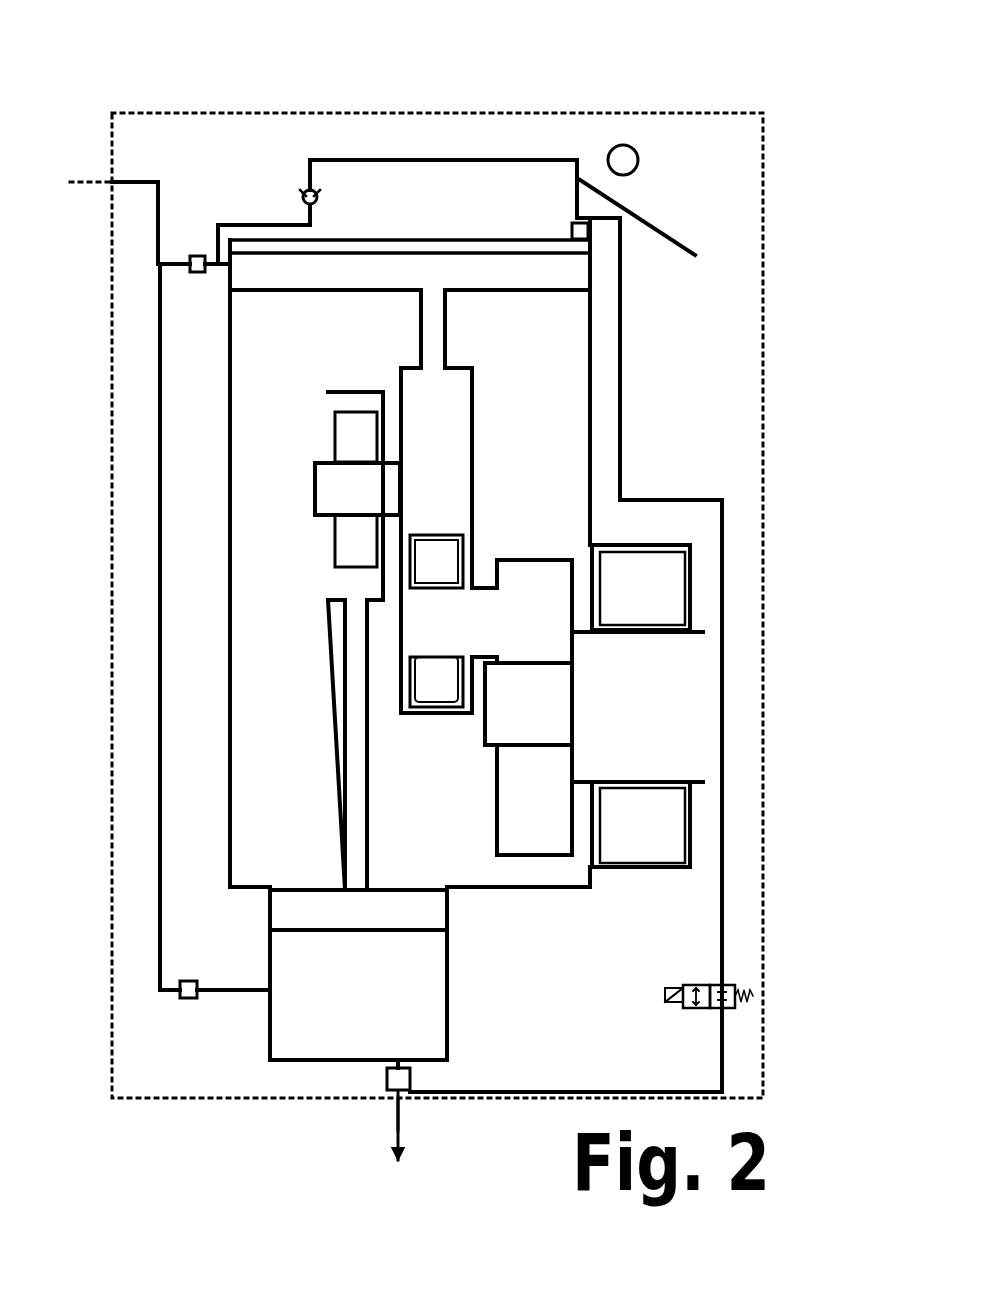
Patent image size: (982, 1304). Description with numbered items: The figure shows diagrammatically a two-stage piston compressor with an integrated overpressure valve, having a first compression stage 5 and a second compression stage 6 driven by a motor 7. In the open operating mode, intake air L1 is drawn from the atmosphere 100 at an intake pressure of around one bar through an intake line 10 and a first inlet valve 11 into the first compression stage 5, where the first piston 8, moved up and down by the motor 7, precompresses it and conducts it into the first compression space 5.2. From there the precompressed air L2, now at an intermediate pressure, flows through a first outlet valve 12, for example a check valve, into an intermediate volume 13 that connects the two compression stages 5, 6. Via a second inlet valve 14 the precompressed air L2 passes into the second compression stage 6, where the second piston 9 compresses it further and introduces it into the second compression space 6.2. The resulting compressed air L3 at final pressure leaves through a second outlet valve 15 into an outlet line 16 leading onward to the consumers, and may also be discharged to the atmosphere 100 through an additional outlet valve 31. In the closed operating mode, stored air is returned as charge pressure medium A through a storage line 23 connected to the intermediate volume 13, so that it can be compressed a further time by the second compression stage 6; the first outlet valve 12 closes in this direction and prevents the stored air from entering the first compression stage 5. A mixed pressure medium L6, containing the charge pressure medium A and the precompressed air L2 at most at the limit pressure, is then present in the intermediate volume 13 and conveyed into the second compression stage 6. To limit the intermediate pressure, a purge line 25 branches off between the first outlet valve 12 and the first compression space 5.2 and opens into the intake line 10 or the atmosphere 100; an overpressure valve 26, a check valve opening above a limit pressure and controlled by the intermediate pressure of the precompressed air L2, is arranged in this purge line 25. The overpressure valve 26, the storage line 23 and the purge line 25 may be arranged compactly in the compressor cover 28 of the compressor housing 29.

The charge pressure medium A is at (97, 182).
The storage line 23 is at (114, 180).
The first outlet valve 12 is at (200, 277).
The intermediate volume 13 is at (163, 630).
The second inlet valve 14 is at (195, 1000).
The mixed pressure medium L6 is at (163, 838).
The precompressed air L2 is at (210, 260).
The purge line 25 is at (314, 218).
The overpressure valve 26 is at (310, 182).
The intake line 10 is at (576, 193).
The atmosphere 100 is at (627, 173).
The intake air L1 is at (657, 241).
The compressor cover 28 is at (570, 130).
The first inlet valve 11 is at (572, 229).
The first compression space 5.2 is at (443, 247).
The first compression stage 5 is at (635, 293).
The compressor housing 29 is at (765, 490).
The first piston 8 is at (510, 283).
The second piston 9 is at (296, 903).
The motor 7 is at (658, 723).
The second compression space 6.2 is at (397, 1022).
The second compression stage 6 is at (470, 952).
The second outlet valve 15 is at (410, 1092).
The outlet line 16 is at (398, 1110).
The compressed air L3 is at (415, 1128).
The additional outlet valve 31 is at (687, 1007).